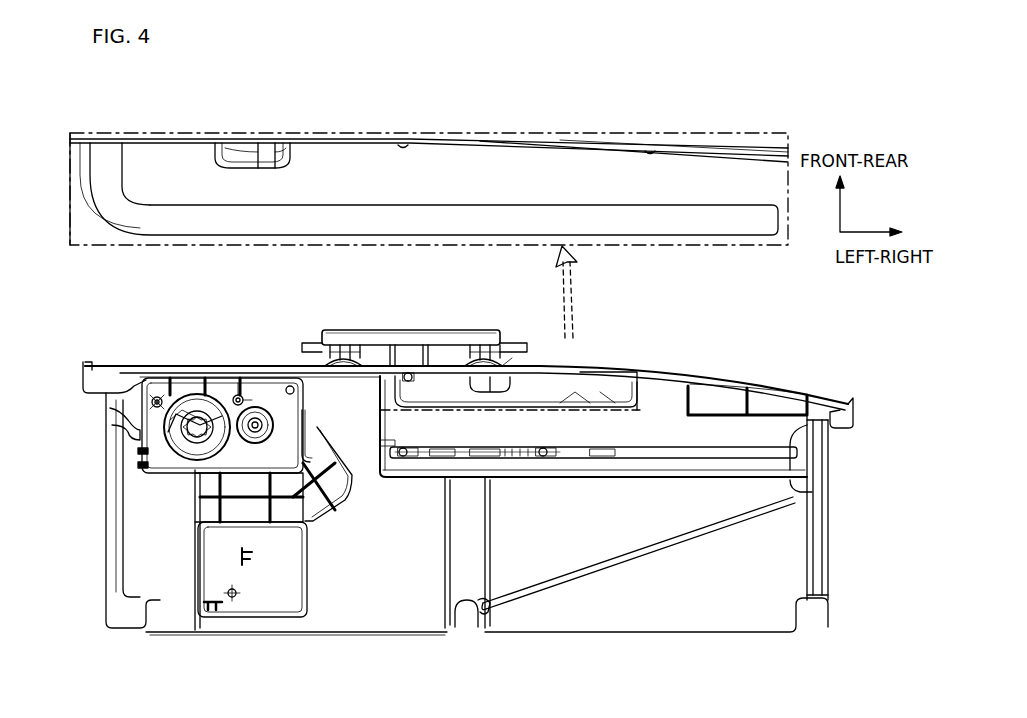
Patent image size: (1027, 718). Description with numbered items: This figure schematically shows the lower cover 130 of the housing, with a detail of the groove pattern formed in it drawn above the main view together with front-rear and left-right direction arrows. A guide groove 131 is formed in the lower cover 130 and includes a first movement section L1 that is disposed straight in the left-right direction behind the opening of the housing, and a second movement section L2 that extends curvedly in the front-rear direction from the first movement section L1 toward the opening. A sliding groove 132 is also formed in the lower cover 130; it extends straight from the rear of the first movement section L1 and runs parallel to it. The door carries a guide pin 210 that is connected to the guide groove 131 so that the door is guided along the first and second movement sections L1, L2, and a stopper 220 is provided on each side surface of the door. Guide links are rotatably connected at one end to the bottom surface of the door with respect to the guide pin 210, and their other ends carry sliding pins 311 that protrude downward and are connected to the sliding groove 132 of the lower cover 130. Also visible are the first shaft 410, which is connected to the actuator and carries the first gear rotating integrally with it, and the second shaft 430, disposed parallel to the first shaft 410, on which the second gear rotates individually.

The lower cover 130 is at (346, 595).
The guide groove 131 is at (188, 222).
The sliding groove 132 is at (716, 450).
The guide pin 210 is at (408, 372).
The stopper 220 is at (514, 346).
The sliding pin 311 is at (400, 460).
The first shaft 410 is at (199, 420).
The second shaft 430 is at (255, 413).
The first movement section L1 is at (692, 222).
The second movement section L2 is at (100, 167).